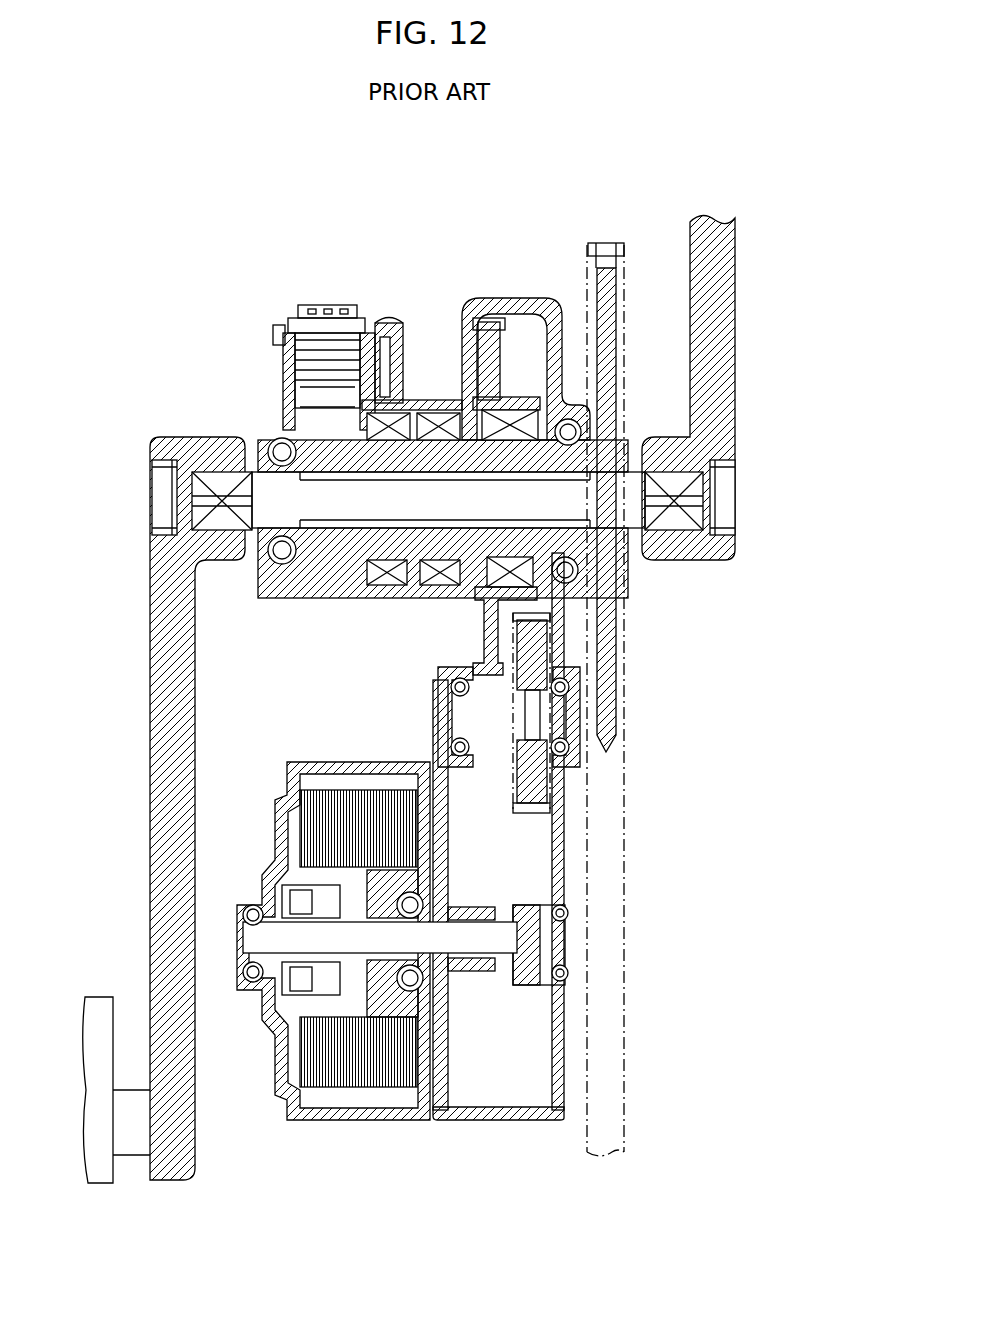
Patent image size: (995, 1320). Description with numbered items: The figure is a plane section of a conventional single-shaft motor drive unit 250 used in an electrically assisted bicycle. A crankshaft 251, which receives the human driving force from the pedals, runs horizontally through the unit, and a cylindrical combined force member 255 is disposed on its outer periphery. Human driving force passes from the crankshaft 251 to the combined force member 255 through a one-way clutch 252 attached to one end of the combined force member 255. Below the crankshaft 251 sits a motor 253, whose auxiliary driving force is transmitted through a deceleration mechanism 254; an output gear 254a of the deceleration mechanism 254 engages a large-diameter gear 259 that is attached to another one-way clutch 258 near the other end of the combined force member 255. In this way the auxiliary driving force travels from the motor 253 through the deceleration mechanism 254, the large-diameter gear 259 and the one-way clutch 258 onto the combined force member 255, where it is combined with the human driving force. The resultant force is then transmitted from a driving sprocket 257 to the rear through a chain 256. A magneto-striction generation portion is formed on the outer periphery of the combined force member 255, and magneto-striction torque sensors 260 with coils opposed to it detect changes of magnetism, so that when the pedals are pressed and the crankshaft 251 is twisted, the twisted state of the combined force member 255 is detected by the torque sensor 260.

The single-shaft motor drive unit 250 is at (166, 250).
The crankshaft 251 is at (293, 500).
The one-way clutch 252 is at (316, 578).
The motor 253 is at (351, 1142).
The deceleration mechanism 254 is at (472, 779).
The output gear 254a is at (545, 777).
The combined force member 255 is at (418, 452).
The chain 256 is at (613, 806).
The driving sprocket 257 is at (608, 663).
The one-way clutch 258 is at (530, 578).
The large-diameter gear 259 is at (478, 640).
The magneto-striction torque sensor 260 is at (363, 590).